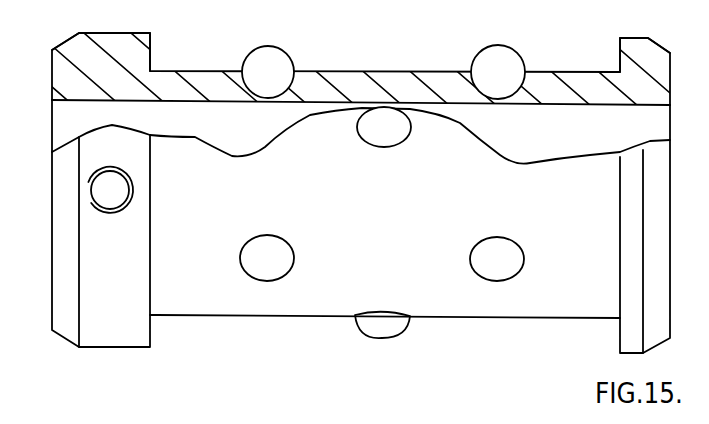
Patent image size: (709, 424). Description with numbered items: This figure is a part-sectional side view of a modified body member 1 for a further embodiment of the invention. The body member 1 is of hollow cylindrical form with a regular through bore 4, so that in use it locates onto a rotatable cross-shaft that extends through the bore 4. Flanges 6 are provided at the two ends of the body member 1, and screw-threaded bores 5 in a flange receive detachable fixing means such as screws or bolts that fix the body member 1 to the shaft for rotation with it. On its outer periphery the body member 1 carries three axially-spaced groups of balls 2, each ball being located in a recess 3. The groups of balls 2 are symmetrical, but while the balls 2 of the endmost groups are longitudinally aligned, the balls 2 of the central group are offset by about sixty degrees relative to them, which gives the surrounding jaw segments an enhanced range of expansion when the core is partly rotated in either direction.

The body member 1 is at (353, 82).
The balls 2 is at (257, 60).
The recesses 3 is at (267, 103).
The through bore 4 is at (337, 103).
The screw-threaded bores 5 is at (97, 178).
The flanges 6 is at (122, 45).